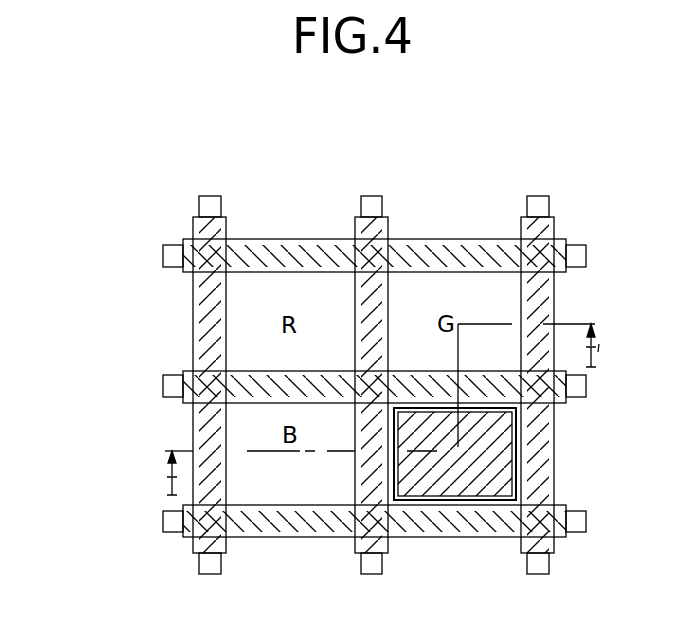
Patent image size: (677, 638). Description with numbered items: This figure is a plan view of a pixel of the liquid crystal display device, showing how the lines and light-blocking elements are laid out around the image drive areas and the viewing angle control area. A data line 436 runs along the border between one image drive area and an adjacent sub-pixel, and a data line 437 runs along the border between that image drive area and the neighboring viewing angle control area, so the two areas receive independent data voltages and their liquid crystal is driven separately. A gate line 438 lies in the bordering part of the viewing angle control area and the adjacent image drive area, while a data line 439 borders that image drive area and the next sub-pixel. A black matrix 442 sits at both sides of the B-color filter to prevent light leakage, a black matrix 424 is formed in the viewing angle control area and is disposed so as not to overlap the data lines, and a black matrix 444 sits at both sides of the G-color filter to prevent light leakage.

The black matrix 424 is at (465, 496).
The data line 436 is at (205, 571).
The data line 437 is at (375, 574).
The gate line 438 is at (163, 397).
The data line 439 is at (540, 574).
The black matrix 442 is at (286, 537).
The black matrix 444 is at (553, 308).